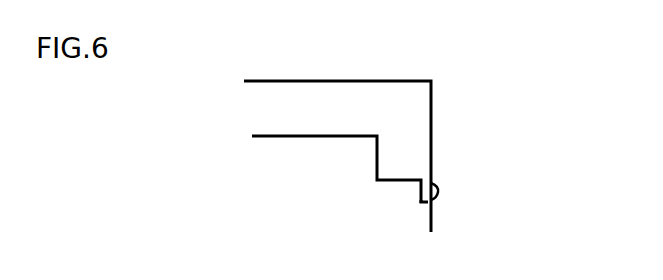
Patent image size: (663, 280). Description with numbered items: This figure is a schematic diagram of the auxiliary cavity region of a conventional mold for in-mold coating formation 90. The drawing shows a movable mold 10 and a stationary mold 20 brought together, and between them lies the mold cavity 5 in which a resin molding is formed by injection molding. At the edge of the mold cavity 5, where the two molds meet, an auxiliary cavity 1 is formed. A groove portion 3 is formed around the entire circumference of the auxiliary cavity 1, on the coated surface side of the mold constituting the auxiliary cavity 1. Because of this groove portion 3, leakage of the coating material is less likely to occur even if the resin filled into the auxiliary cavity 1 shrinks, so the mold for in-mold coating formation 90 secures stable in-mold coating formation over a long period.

The mold for in-mold coating formation 90 is at (452, 58).
The movable mold 10 is at (448, 125).
The mold cavity 5 is at (337, 95).
The stationary mold 20 is at (350, 190).
The auxiliary cavity 1 is at (420, 203).
The groove portion 3 is at (438, 193).